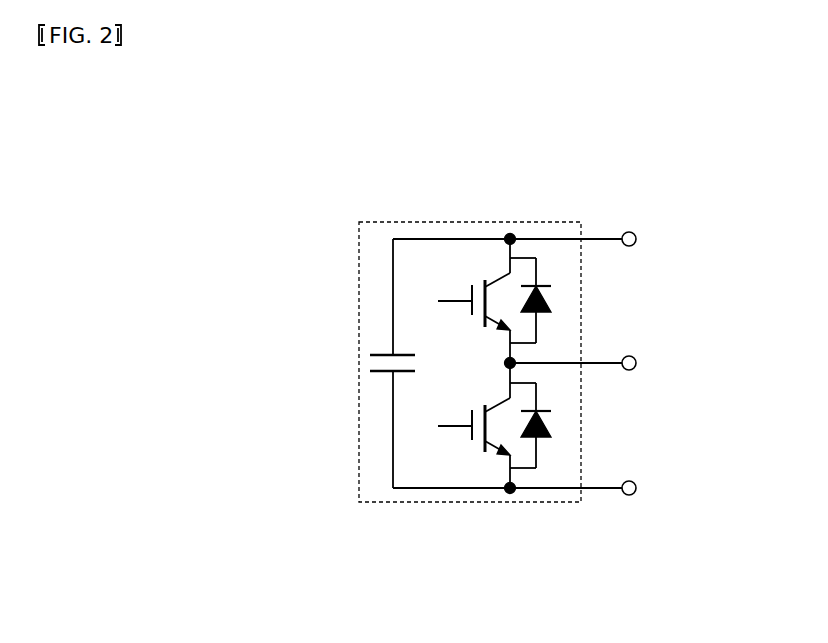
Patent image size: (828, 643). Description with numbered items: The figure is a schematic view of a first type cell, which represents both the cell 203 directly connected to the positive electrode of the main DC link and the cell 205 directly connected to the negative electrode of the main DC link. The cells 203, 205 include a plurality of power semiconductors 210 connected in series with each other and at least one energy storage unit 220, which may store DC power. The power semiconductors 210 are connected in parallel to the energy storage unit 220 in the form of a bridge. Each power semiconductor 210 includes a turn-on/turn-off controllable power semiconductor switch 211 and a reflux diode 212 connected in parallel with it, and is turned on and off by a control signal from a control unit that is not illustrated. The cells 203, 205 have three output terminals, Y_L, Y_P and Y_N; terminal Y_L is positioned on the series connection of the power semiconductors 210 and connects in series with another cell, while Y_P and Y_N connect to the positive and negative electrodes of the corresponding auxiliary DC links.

The cell 203 is at (184, 120).
The cell 205 is at (415, 315).
The power semiconductor 210 is at (481, 253).
The power semiconductor switch 211 is at (471, 287).
The reflux diode 212 is at (557, 297).
The energy storage unit 220 is at (383, 376).